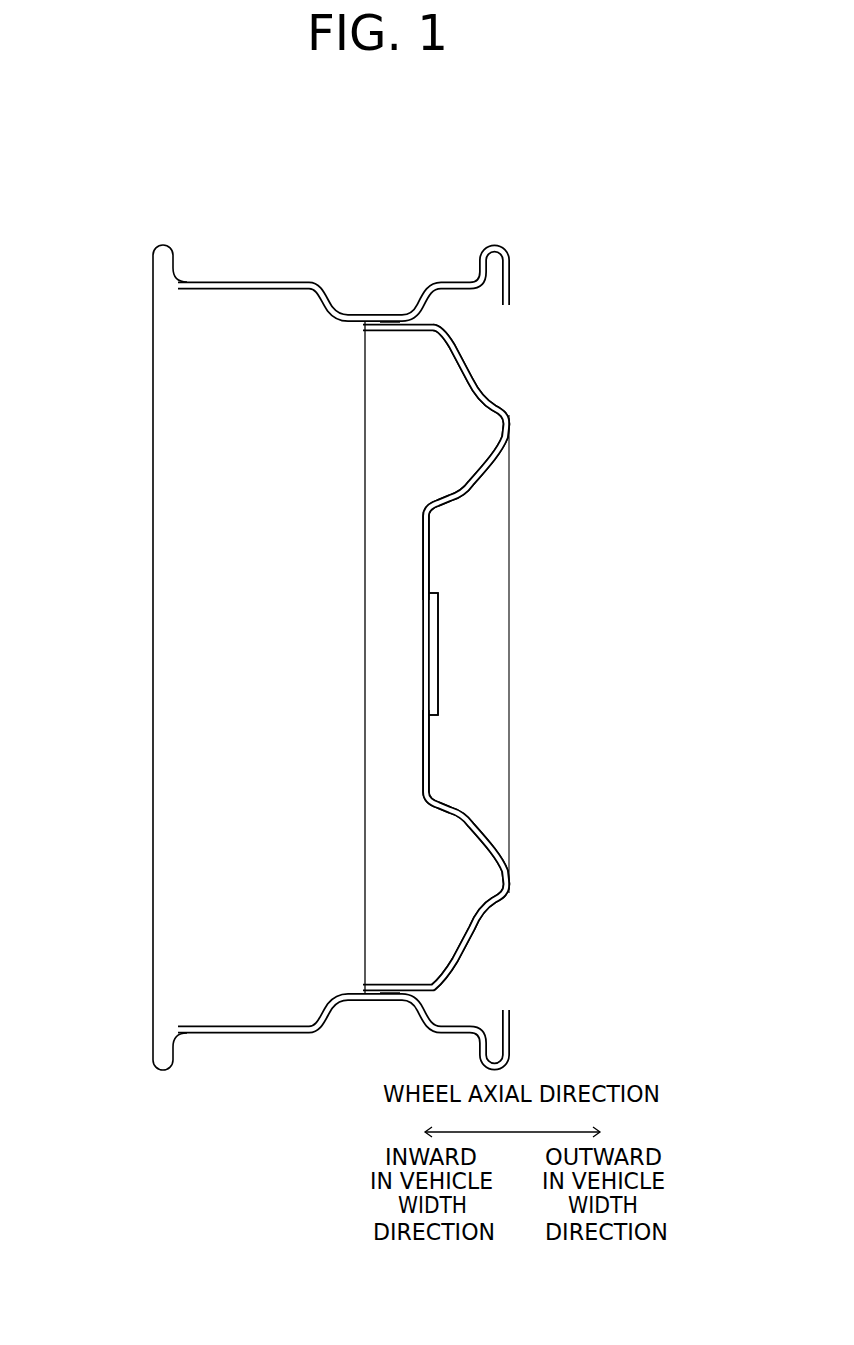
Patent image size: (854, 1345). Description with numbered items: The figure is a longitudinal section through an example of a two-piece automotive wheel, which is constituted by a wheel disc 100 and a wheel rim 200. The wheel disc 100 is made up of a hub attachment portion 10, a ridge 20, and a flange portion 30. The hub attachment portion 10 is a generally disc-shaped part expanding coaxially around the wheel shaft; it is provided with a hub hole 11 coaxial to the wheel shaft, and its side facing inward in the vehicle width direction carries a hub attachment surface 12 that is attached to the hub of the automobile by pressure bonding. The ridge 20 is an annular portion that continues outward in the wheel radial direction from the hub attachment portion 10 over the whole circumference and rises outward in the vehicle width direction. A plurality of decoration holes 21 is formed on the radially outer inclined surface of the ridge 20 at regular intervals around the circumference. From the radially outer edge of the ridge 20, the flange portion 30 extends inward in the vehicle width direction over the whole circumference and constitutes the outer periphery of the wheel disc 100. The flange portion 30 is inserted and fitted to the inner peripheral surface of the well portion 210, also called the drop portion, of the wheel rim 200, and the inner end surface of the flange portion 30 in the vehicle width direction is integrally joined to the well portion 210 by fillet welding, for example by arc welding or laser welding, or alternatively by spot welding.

The wheel disc 100 is at (556, 382).
The hub attachment portion 10 is at (427, 555).
The hub hole 11 is at (430, 679).
The hub attachment surface 12 is at (420, 657).
The ridge 20 is at (510, 415).
The decoration holes 21 is at (467, 353).
The flange portion 30 is at (390, 329).
The wheel rim 200 is at (242, 268).
The well portion 210 is at (360, 313).